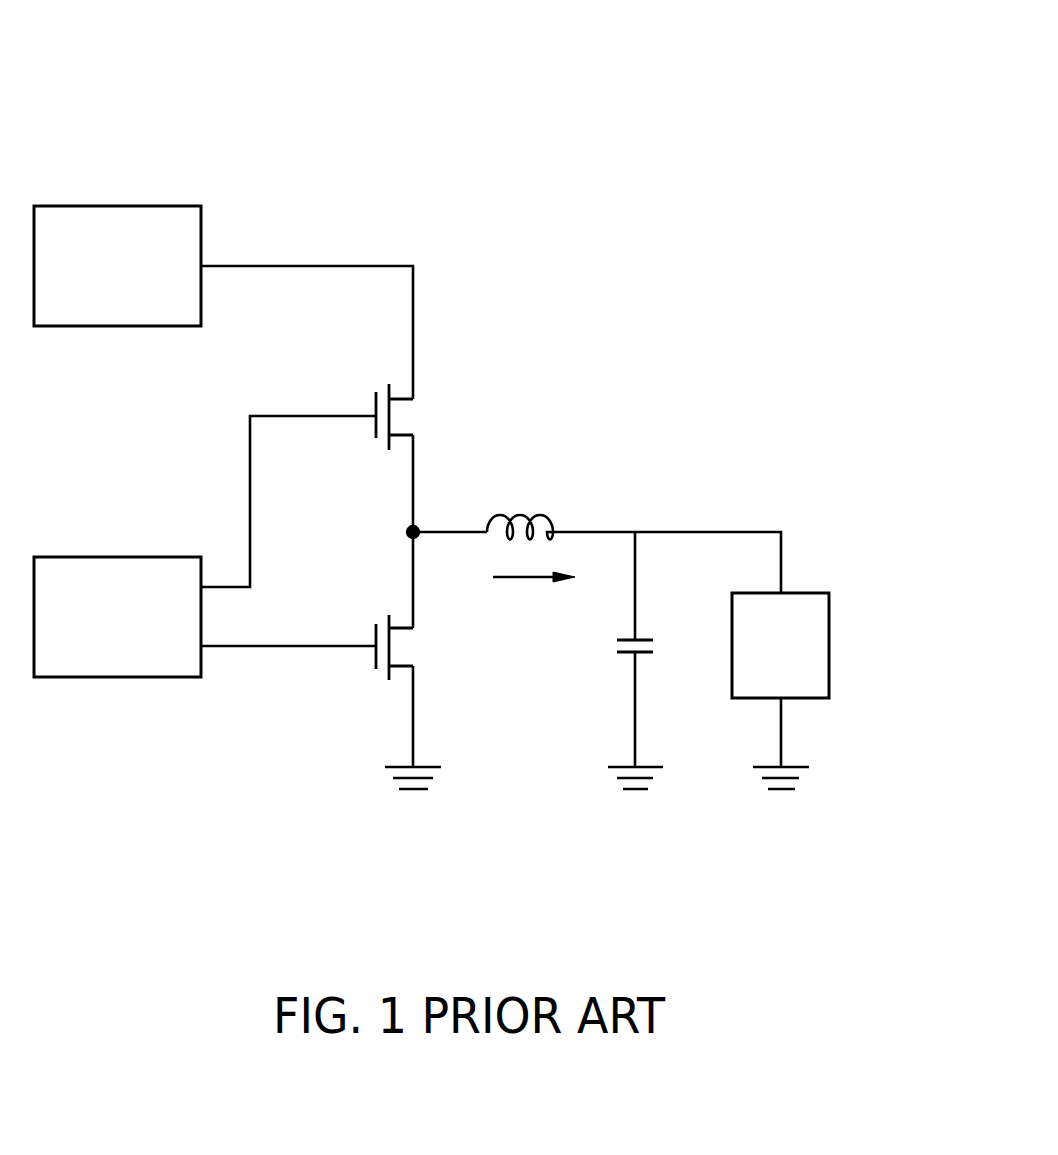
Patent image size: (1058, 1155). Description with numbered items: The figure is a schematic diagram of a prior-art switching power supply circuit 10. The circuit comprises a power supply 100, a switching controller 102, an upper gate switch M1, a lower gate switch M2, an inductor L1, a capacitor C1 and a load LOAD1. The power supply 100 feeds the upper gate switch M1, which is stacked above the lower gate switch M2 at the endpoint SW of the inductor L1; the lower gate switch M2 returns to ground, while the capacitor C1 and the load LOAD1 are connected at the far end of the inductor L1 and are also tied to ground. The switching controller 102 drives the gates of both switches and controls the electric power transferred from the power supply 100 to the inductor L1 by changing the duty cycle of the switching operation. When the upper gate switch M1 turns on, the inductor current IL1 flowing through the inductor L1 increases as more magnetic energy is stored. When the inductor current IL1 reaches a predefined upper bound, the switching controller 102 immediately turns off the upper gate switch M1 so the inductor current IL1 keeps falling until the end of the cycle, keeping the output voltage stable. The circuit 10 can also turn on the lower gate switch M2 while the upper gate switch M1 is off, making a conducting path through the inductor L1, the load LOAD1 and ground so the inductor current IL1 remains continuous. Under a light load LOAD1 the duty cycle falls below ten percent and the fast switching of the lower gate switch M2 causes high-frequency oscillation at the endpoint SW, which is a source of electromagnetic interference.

The switching power supply circuit 10 is at (713, 122).
The power supply 100 is at (118, 206).
The switching controller 102 is at (118, 557).
The upper gate switch M1 is at (419, 417).
The lower gate switch M2 is at (420, 647).
The endpoint SW is at (385, 531).
The inductor L1 is at (523, 508).
The inductor current IL1 is at (534, 594).
The capacitor C1 is at (653, 648).
The load LOAD1 is at (832, 645).